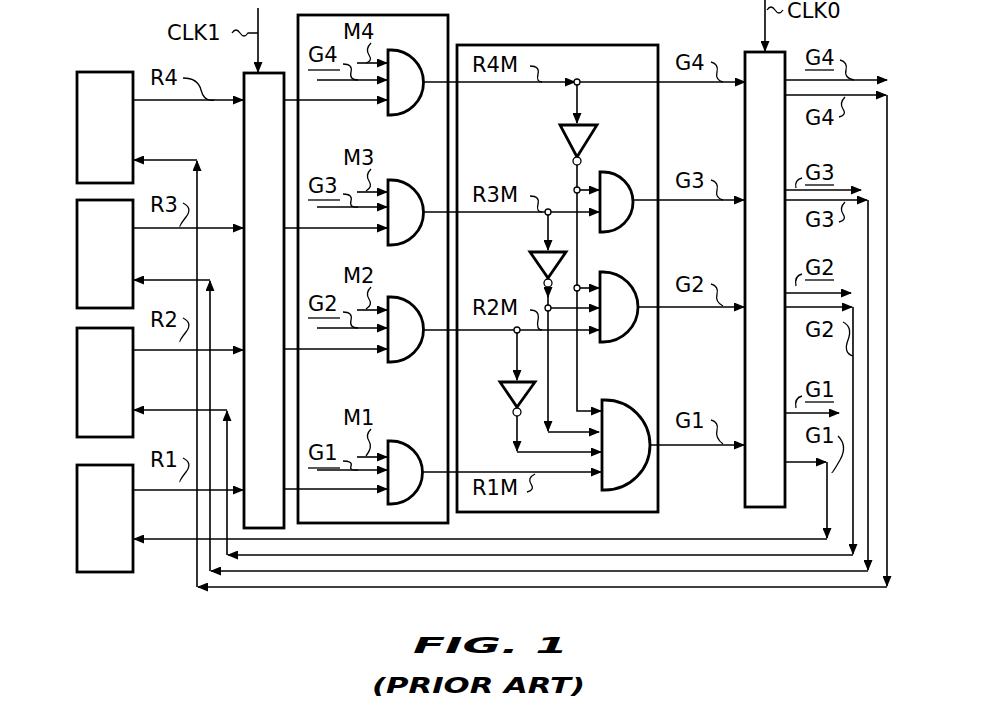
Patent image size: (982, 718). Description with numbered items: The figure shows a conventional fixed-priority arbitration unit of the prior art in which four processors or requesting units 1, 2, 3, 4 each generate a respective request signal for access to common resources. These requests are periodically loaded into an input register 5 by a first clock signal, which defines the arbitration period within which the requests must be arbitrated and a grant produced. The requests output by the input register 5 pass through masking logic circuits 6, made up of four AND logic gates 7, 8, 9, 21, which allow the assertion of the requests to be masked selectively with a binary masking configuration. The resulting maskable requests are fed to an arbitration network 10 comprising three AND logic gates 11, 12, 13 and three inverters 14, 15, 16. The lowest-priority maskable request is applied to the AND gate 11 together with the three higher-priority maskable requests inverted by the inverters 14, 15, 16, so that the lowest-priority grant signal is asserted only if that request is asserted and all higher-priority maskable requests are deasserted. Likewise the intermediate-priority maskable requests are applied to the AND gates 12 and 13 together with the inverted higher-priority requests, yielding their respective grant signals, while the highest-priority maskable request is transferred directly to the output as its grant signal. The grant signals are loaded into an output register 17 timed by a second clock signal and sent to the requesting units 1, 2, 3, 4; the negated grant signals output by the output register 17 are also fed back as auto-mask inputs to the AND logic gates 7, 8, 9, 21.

The requesting unit 1 is at (77, 518).
The requesting unit 2 is at (77, 396).
The requesting unit 3 is at (77, 266).
The requesting unit 4 is at (77, 130).
The input register 5 is at (243, 130).
The masking logic circuits 6 is at (448, 32).
The AND logic gate 7 is at (410, 106).
The AND logic gate 8 is at (410, 236).
The AND logic gate 9 is at (410, 353).
The arbitration network 10 is at (598, 45).
The AND logic gate 11 is at (630, 400).
The AND logic gate 12 is at (627, 272).
The AND logic gate 13 is at (627, 172).
The inverter 14 is at (564, 132).
The inverter 15 is at (538, 256).
The inverter 16 is at (506, 398).
The output register 17 is at (745, 367).
The AND logic gate 21 is at (402, 448).